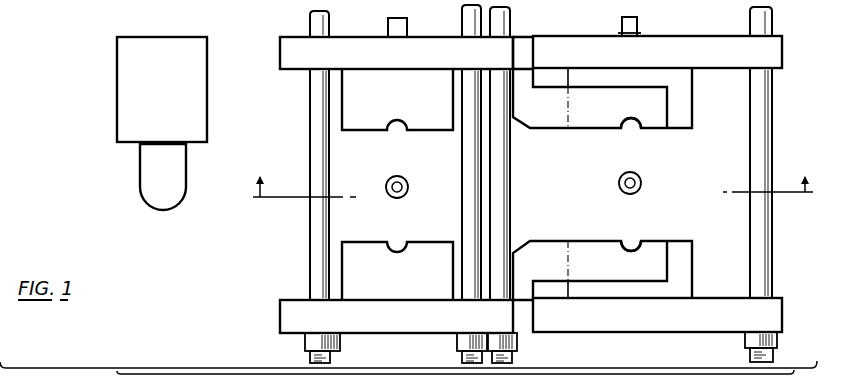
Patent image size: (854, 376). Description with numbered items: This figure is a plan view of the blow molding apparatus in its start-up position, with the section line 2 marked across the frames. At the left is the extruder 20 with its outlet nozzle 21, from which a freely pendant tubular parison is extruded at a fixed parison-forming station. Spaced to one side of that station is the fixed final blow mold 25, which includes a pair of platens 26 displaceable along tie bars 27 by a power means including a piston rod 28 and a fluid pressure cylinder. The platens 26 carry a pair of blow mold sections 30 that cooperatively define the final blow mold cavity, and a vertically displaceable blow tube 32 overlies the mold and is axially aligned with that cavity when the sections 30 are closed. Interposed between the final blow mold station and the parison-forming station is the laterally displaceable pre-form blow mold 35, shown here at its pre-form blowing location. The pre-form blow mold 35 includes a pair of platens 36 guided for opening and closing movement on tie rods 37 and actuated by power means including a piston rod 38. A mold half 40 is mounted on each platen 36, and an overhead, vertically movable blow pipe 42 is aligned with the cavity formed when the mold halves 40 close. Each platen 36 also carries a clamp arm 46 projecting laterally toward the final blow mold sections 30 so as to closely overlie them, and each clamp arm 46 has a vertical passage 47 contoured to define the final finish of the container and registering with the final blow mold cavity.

The extruder 20 is at (112, 70).
The outlet nozzle 21 is at (146, 187).
The section line 2- 2 is at (533, 173).
The blow mold 25 is at (654, 181).
The platens 26 is at (772, 49).
The tie bars 27 is at (511, 217).
The piston rod 28 is at (622, 25).
The blow mold sections 30 is at (682, 108).
The blow tube 32 is at (641, 184).
The pre-form blow mold 35 is at (378, 181).
The platens 36 is at (280, 52).
The tie rods 37 is at (310, 217).
The piston rod 38 is at (388, 25).
The mold half 40 is at (412, 99).
The blow pipe 42 is at (408, 186).
The clamp arm 46 is at (562, 122).
The vertical passage 47 is at (633, 124).